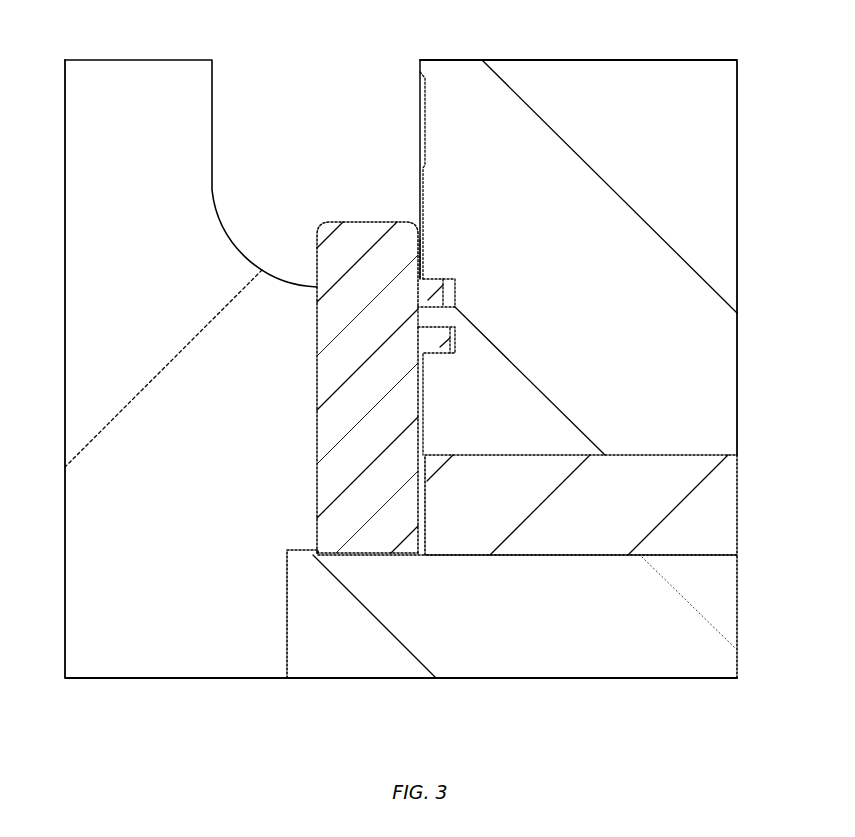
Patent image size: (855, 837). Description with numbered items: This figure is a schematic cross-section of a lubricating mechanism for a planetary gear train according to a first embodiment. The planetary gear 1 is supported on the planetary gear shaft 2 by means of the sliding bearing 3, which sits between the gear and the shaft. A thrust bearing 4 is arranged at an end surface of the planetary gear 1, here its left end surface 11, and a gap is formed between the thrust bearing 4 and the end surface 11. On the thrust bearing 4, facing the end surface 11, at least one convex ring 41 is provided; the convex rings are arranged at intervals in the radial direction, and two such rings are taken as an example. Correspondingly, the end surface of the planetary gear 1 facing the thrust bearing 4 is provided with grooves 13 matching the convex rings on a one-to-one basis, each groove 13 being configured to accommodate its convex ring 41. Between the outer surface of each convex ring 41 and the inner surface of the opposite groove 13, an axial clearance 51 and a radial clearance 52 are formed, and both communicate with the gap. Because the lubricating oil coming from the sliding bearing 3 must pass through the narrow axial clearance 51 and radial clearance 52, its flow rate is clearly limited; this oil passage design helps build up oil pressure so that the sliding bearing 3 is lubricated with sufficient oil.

The planetary gear 1 is at (683, 172).
The left end surface 11 is at (421, 98).
The groove 13 is at (456, 293).
The planetary gear shaft 2 is at (640, 647).
The sliding bearing 3 is at (697, 527).
The thrust bearing 4 is at (345, 497).
The convex ring 41 is at (430, 297).
The axial clearance 51 is at (452, 342).
The radial clearance 52 is at (436, 280).